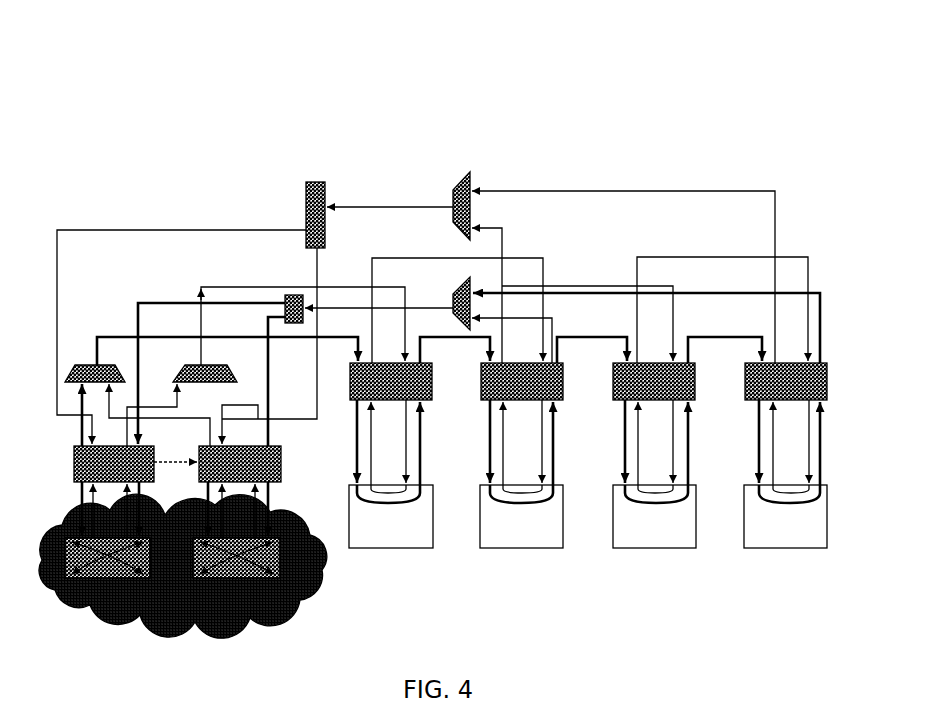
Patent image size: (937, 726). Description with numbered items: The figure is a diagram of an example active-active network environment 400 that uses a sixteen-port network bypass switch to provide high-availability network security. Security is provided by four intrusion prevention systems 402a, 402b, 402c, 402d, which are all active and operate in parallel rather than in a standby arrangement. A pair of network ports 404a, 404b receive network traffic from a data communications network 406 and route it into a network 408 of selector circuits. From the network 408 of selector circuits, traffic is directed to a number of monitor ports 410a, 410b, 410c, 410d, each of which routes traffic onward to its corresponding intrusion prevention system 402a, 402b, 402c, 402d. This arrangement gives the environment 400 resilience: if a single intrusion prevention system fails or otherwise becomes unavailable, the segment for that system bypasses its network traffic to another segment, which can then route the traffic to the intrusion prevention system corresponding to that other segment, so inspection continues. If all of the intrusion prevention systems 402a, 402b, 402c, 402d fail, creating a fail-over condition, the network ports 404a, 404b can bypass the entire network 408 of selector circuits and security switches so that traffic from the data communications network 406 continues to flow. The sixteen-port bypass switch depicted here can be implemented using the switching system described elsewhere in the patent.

The active-active network environment 400 is at (368, 38).
The intrusion prevention system 402a is at (391, 551).
The intrusion prevention system 402b is at (524, 551).
The intrusion prevention system 402c is at (658, 551).
The intrusion prevention system 402d is at (786, 551).
The network port 404a is at (74, 470).
The network port 404b is at (282, 470).
The data communications network 406 is at (290, 609).
The network of selector circuits 408 is at (262, 196).
The monitor port 410a is at (434, 382).
The monitor port 410b is at (565, 382).
The monitor port 410c is at (697, 382).
The monitor port 410d is at (790, 363).